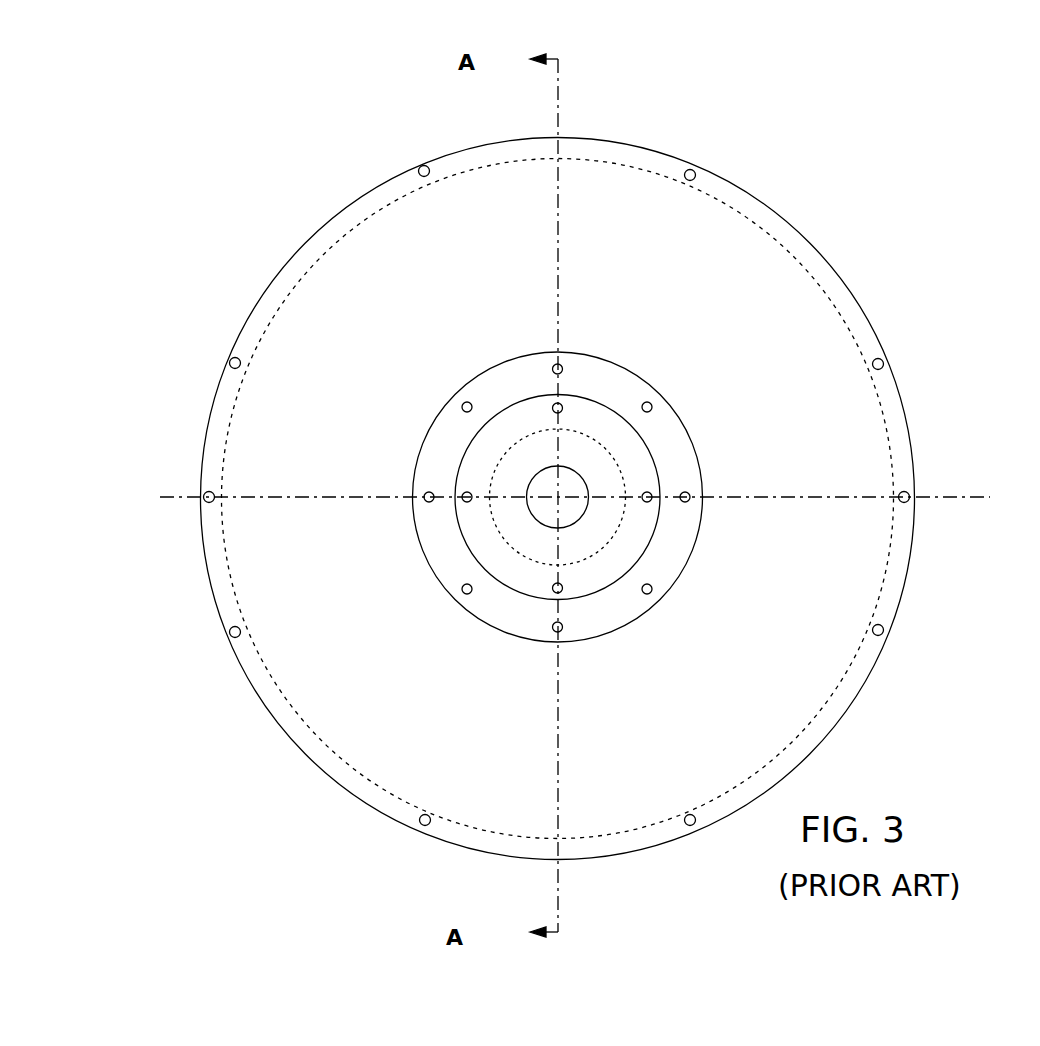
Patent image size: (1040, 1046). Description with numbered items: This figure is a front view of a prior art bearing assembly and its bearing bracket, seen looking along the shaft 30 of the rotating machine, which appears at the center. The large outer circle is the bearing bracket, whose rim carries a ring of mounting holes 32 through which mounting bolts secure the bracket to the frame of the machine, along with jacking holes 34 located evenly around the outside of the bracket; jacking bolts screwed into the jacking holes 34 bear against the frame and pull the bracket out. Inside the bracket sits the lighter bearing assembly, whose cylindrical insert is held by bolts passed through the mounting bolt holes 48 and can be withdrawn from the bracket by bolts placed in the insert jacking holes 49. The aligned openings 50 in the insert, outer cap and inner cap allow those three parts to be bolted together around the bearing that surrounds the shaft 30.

The shaft 30 is at (568, 514).
The mounting holes 32 is at (429, 167).
The jacking holes 34 is at (206, 491).
The mounting bolt holes 48 is at (562, 364).
The insert jacking holes 49 is at (463, 400).
The aligned openings 50 is at (563, 403).